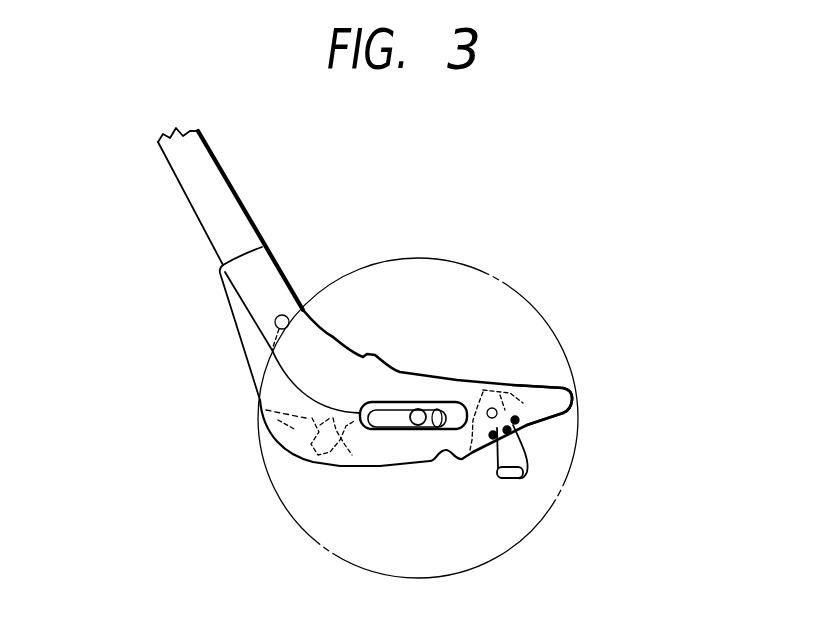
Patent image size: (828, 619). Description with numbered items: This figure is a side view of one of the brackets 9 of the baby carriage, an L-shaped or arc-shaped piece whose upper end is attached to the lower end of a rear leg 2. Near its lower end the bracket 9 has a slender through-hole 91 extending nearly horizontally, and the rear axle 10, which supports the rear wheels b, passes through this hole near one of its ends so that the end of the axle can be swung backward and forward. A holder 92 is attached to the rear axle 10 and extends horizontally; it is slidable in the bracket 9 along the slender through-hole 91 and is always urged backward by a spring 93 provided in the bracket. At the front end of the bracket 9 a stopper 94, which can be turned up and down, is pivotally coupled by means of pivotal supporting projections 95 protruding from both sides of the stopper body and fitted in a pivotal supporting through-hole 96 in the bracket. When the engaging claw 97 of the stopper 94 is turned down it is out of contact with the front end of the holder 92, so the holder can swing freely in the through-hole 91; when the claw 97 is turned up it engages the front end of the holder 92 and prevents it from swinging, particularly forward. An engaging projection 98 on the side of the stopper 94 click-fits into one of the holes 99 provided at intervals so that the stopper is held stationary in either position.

The rear leg 2 is at (188, 173).
The bracket 9 is at (270, 298).
The rear wheel b is at (398, 280).
The rear axle 10 is at (403, 433).
The through-hole 91 is at (437, 434).
The holder 92 is at (422, 400).
The spring 93 is at (323, 470).
The stopper 94 is at (557, 403).
The pivotal supporting projection 95 is at (492, 408).
The pivotal supporting through-hole 96 is at (520, 385).
The engaging claw 97 is at (471, 458).
The engaging projection 98 is at (523, 427).
The hole 99 is at (523, 427).